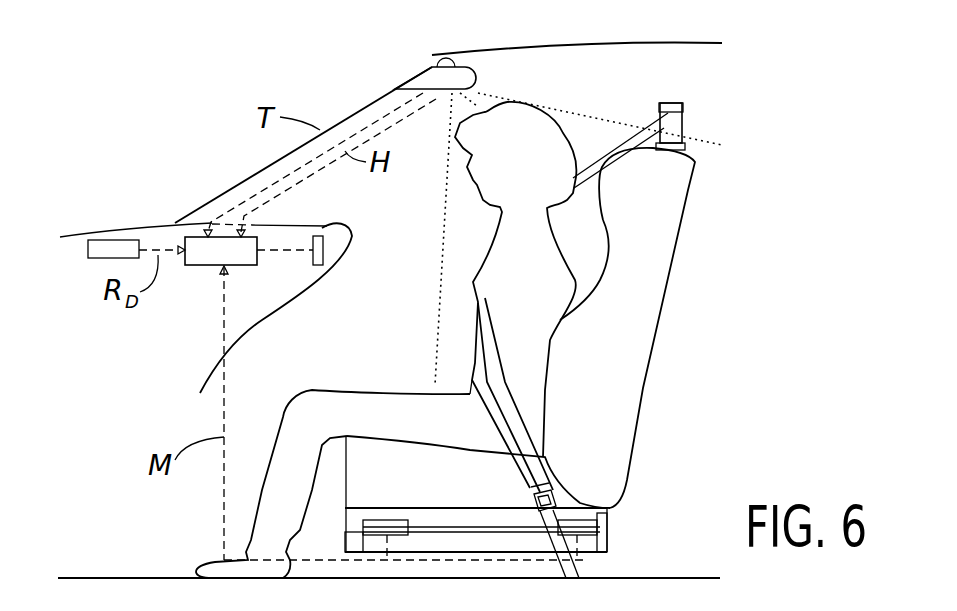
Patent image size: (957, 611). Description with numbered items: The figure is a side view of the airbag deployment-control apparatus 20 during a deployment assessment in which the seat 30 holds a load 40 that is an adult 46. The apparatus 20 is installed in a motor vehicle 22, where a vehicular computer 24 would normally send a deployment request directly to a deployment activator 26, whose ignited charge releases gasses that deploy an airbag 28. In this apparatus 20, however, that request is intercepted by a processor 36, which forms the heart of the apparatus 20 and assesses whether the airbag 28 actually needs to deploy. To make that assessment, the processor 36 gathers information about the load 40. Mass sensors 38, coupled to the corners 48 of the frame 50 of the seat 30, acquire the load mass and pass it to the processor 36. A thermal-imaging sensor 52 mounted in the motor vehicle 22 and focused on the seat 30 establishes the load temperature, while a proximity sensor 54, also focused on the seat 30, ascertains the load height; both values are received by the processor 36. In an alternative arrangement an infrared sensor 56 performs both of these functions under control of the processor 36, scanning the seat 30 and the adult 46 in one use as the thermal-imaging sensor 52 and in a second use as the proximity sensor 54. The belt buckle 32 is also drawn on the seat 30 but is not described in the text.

The airbag deployment-control apparatus 20 is at (768, 453).
The motor vehicle 22 is at (156, 222).
The vehicular computer 24 is at (128, 240).
The deployment activator 26 is at (312, 258).
The airbag 28 is at (332, 236).
The seat 30 is at (358, 450).
The seat belt buckle 32 is at (534, 470).
The processor 36 is at (198, 237).
The mass sensors 38 is at (355, 525).
The load 40 is at (510, 265).
The adult 46 is at (505, 300).
The corners 48 is at (345, 540).
The frame 50 is at (392, 515).
The thermal-imaging sensor 52 is at (432, 68).
The proximity sensor 54 is at (430, 80).
The infrared sensor 56 is at (458, 66).